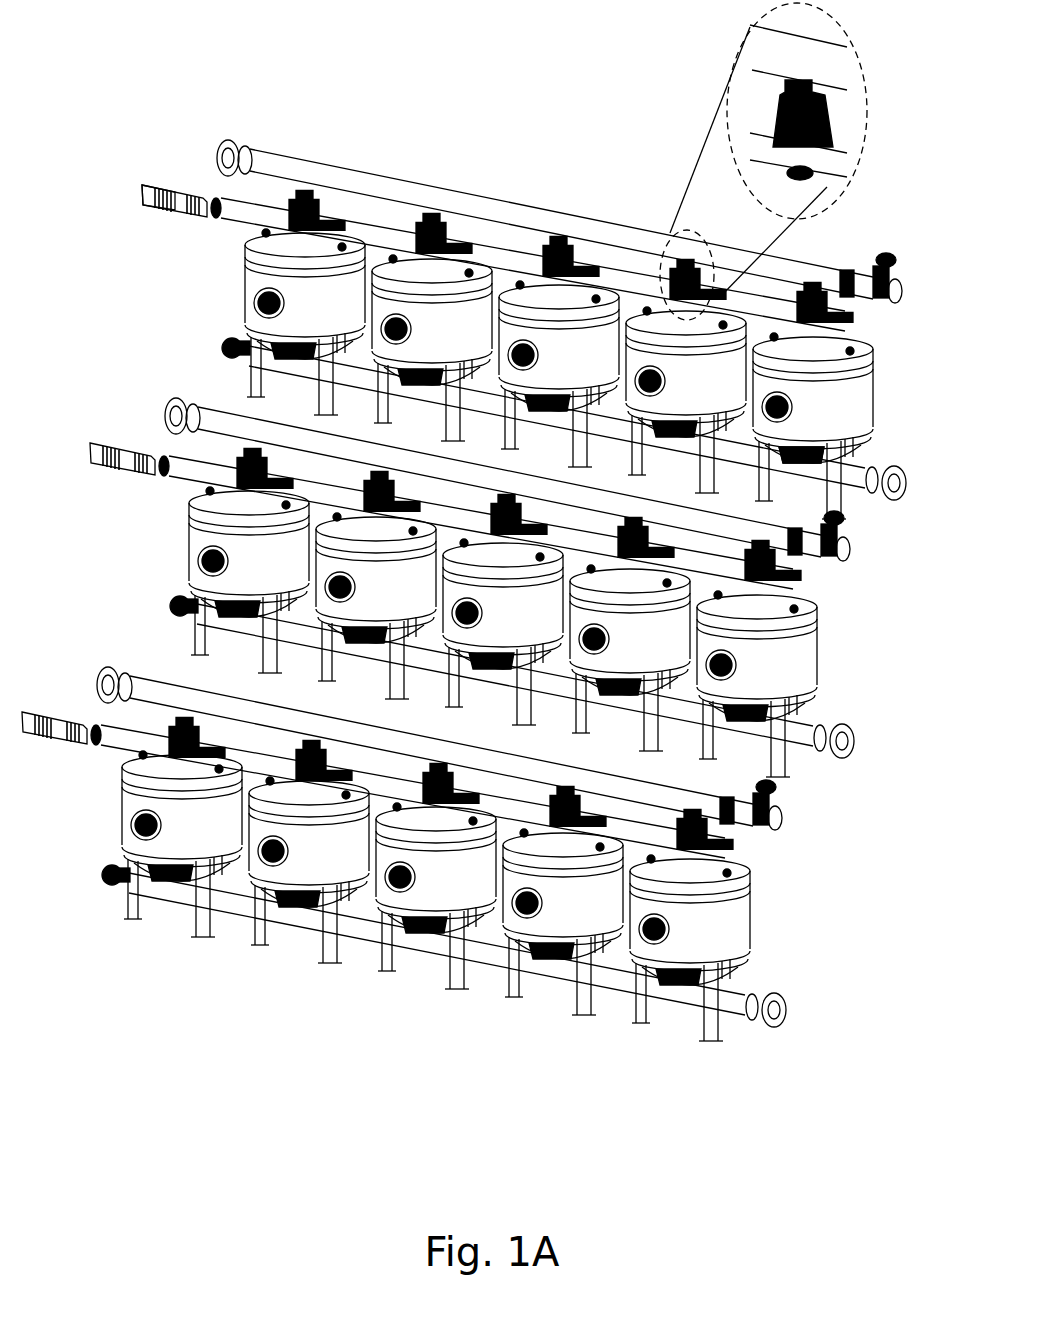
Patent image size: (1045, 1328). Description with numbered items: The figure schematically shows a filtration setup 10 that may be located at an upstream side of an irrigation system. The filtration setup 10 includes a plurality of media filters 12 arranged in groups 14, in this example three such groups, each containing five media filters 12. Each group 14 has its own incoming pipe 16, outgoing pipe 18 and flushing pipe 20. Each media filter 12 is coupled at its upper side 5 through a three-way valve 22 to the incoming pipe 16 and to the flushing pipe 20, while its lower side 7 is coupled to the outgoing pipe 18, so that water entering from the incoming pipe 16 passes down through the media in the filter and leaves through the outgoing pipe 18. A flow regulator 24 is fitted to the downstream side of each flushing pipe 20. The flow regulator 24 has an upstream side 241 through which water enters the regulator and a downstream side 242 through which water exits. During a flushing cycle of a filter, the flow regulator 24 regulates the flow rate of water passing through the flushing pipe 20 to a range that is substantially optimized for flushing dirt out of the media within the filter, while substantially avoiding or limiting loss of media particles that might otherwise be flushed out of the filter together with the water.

The upper side 5 is at (788, 65).
The lower side 7 is at (800, 462).
The filtration setup 10 is at (600, 108).
The media filter 12 is at (559, 374).
The group 14 is at (195, 275).
The incoming pipe 16 is at (374, 176).
The outgoing pipe 18 is at (857, 486).
The flushing pipe 20 is at (498, 232).
The three-way valve 22 is at (582, 250).
The flow regulator 24 is at (178, 150).
The upstream side 241 is at (195, 243).
The downstream side 242 is at (104, 221).